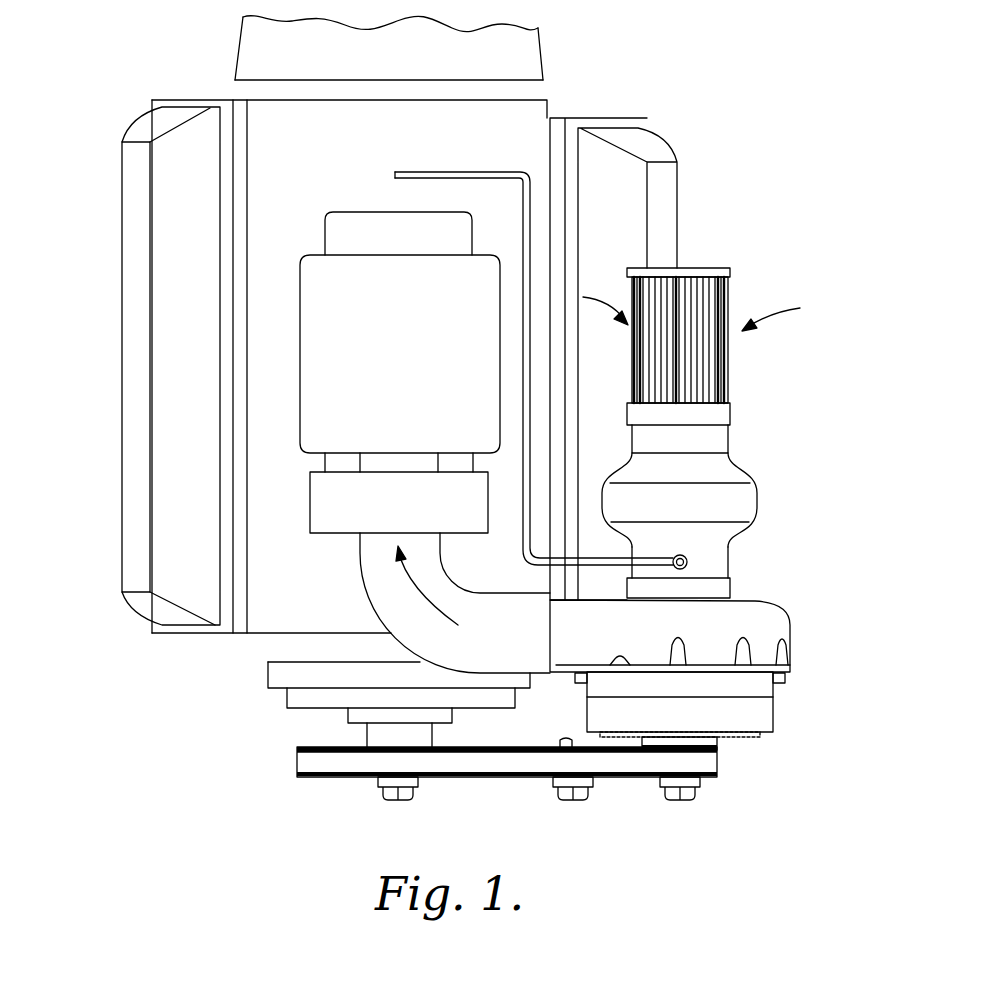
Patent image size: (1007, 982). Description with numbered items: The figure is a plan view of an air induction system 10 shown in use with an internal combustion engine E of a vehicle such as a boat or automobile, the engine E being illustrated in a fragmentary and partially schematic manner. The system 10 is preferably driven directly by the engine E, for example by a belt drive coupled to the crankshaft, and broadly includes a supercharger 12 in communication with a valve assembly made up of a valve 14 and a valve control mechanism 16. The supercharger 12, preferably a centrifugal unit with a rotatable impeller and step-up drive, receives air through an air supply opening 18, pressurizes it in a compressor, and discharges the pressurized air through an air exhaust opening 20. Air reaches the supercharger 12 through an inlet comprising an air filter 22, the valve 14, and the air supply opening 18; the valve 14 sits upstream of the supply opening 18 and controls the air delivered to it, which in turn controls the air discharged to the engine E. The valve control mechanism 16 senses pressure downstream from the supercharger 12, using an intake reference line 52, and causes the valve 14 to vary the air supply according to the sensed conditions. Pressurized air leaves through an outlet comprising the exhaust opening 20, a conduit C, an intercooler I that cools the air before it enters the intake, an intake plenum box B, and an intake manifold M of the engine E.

The air induction system 10 is at (818, 597).
The supercharger 12 is at (777, 625).
The valve 14 is at (745, 466).
The valve control mechanism 16 is at (700, 559).
The air supply opening 18 is at (717, 587).
The air exhaust opening 20 is at (562, 645).
The air filter 22 is at (727, 293).
The intake reference line 52 is at (518, 167).
The internal combustion engine E is at (128, 121).
The intake manifold M is at (260, 220).
The intake plenum box B is at (310, 338).
The intercooler I is at (320, 508).
The conduit C is at (395, 613).